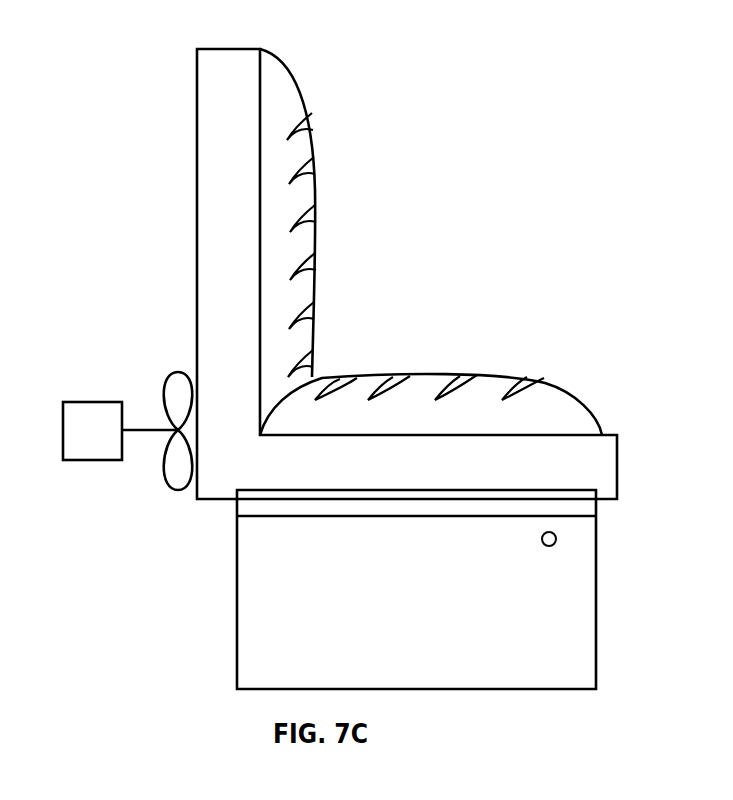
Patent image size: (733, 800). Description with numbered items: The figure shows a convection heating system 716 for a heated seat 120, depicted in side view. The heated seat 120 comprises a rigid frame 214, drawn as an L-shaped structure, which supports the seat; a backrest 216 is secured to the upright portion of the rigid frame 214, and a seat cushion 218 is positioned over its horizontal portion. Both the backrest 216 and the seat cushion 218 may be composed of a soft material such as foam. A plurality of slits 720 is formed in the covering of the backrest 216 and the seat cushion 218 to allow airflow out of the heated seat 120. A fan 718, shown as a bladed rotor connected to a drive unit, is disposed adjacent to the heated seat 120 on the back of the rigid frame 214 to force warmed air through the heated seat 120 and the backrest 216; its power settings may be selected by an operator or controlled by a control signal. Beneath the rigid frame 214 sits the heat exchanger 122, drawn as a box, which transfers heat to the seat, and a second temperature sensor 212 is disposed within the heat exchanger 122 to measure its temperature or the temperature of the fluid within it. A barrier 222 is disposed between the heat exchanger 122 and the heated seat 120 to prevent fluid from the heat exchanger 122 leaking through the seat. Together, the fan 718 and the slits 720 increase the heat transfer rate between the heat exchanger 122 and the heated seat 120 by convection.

The convection heating system 716 is at (554, 61).
The heated seat 120 is at (419, 245).
The rigid frame 214 is at (197, 142).
The backrest 216 is at (294, 82).
The seat cushion 218 is at (578, 397).
The slits 720 is at (313, 162).
The fan 718 is at (93, 402).
The barrier 222 is at (237, 505).
The second temperature sensor 212 is at (558, 536).
The heat exchanger 122 is at (597, 600).